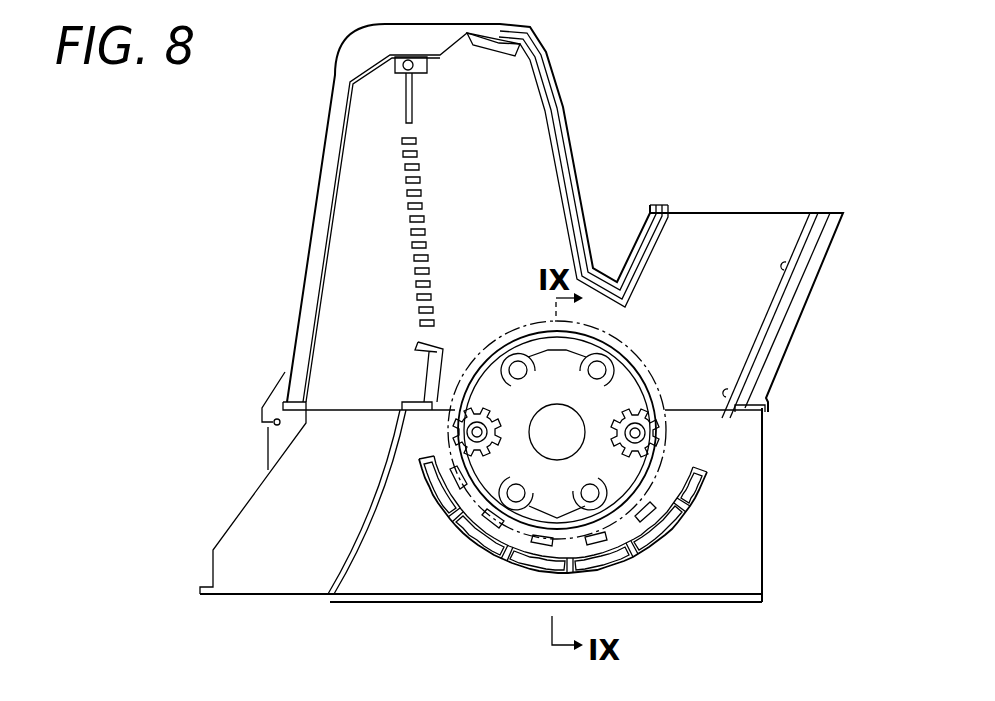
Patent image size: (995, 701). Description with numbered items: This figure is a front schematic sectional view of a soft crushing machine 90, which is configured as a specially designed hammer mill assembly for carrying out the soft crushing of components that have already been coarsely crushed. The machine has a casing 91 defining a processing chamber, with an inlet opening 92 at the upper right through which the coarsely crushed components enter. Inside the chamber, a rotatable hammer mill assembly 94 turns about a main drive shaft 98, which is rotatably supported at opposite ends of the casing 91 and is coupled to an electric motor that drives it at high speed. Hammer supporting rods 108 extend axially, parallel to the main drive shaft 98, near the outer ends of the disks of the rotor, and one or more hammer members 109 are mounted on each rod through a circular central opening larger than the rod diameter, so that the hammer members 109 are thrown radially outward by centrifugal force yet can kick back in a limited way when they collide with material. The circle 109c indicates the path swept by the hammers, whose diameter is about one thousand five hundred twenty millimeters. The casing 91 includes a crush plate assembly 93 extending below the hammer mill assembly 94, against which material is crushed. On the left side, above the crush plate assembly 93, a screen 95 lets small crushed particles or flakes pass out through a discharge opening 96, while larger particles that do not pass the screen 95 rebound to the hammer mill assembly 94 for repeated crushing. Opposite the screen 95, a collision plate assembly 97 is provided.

The soft crushing machine 90 is at (557, 46).
The casing 91 is at (790, 300).
The inlet opening 92 is at (716, 195).
The crush plate assembly 93 is at (582, 565).
The rotatable hammer mill assembly 94 is at (620, 475).
The screen 95 is at (405, 196).
The discharge opening 96 is at (276, 597).
The collision plate assembly 97 is at (562, 124).
The main drive shaft 98 is at (555, 408).
The hammer supporting rods 108 is at (517, 364).
The hammer members 109 is at (645, 410).
The circle 109c is at (640, 356).